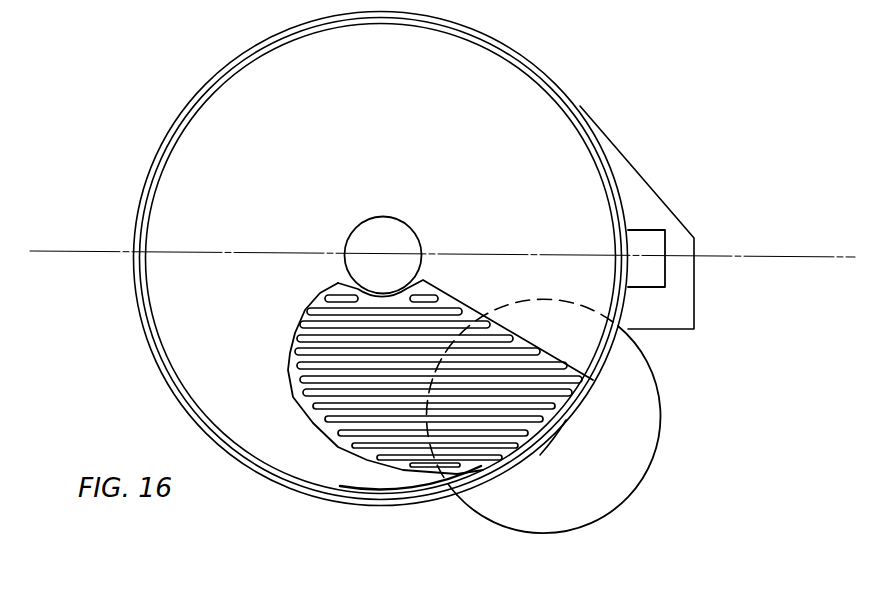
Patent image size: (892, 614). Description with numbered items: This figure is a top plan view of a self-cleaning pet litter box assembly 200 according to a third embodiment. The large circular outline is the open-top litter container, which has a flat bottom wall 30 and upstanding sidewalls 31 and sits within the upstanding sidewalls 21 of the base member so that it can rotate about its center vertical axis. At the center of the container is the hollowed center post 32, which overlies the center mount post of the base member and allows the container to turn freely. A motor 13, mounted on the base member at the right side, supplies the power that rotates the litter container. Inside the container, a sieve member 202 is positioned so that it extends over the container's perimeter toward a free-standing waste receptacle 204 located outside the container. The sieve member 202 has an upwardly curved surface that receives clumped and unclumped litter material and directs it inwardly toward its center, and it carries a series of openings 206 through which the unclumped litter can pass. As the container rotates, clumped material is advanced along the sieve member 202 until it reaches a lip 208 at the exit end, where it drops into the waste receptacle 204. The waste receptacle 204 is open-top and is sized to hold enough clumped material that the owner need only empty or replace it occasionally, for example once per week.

The motor 13 is at (650, 258).
The upstanding sidewalls 21 is at (132, 227).
The flat bottom wall 30 is at (369, 157).
The upstanding sidewalls 31 is at (150, 223).
The hollowed center post 32 is at (413, 234).
The self-cleaning pet litter box assembly 200 is at (100, 321).
The sieve member 202 is at (455, 293).
The waste receptacle 204 is at (630, 489).
The openings 206 is at (320, 427).
The lip 208 is at (568, 421).